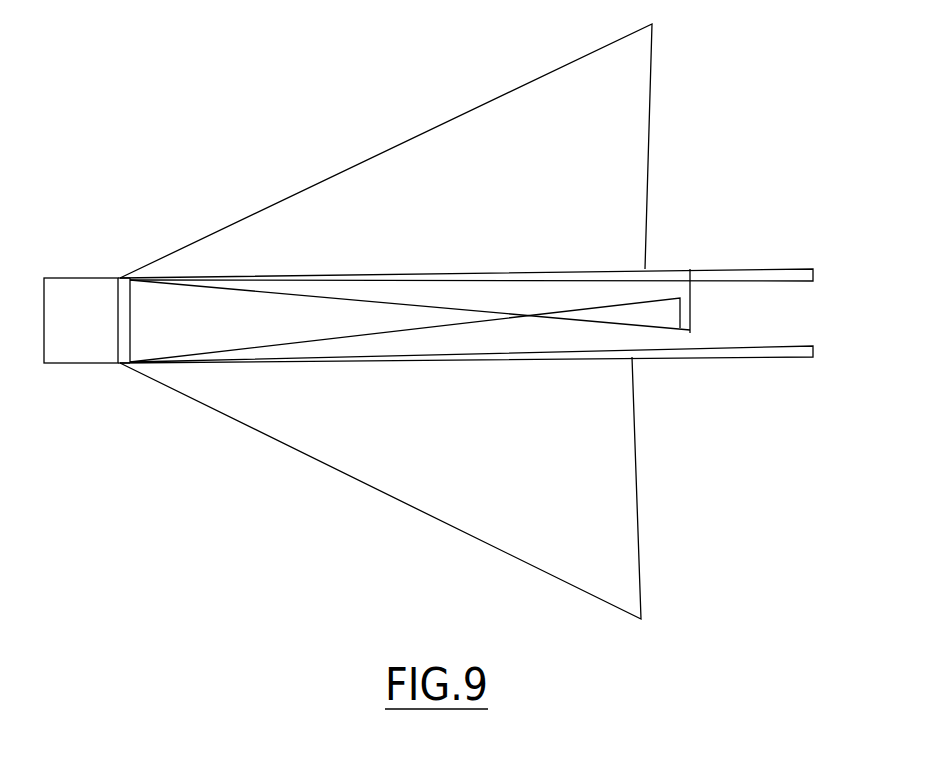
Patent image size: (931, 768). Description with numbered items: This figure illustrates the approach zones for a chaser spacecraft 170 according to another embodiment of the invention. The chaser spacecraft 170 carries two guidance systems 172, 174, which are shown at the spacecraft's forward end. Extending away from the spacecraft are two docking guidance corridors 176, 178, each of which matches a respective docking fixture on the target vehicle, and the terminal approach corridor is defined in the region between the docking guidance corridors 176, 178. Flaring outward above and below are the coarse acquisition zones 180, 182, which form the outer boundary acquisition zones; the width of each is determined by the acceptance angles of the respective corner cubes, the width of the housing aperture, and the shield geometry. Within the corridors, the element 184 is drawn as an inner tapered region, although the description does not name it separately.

The chaser spacecraft 170 is at (74, 278).
The guidance system 172 is at (118, 277).
The guidance system 174 is at (120, 365).
The docking guidance corridor 176 is at (743, 266).
The docking guidance corridor 178 is at (790, 342).
The coarse acquisition zone 180 is at (463, 111).
The coarse acquisition zone 182 is at (405, 504).
The inner tapered element 184 is at (692, 302).